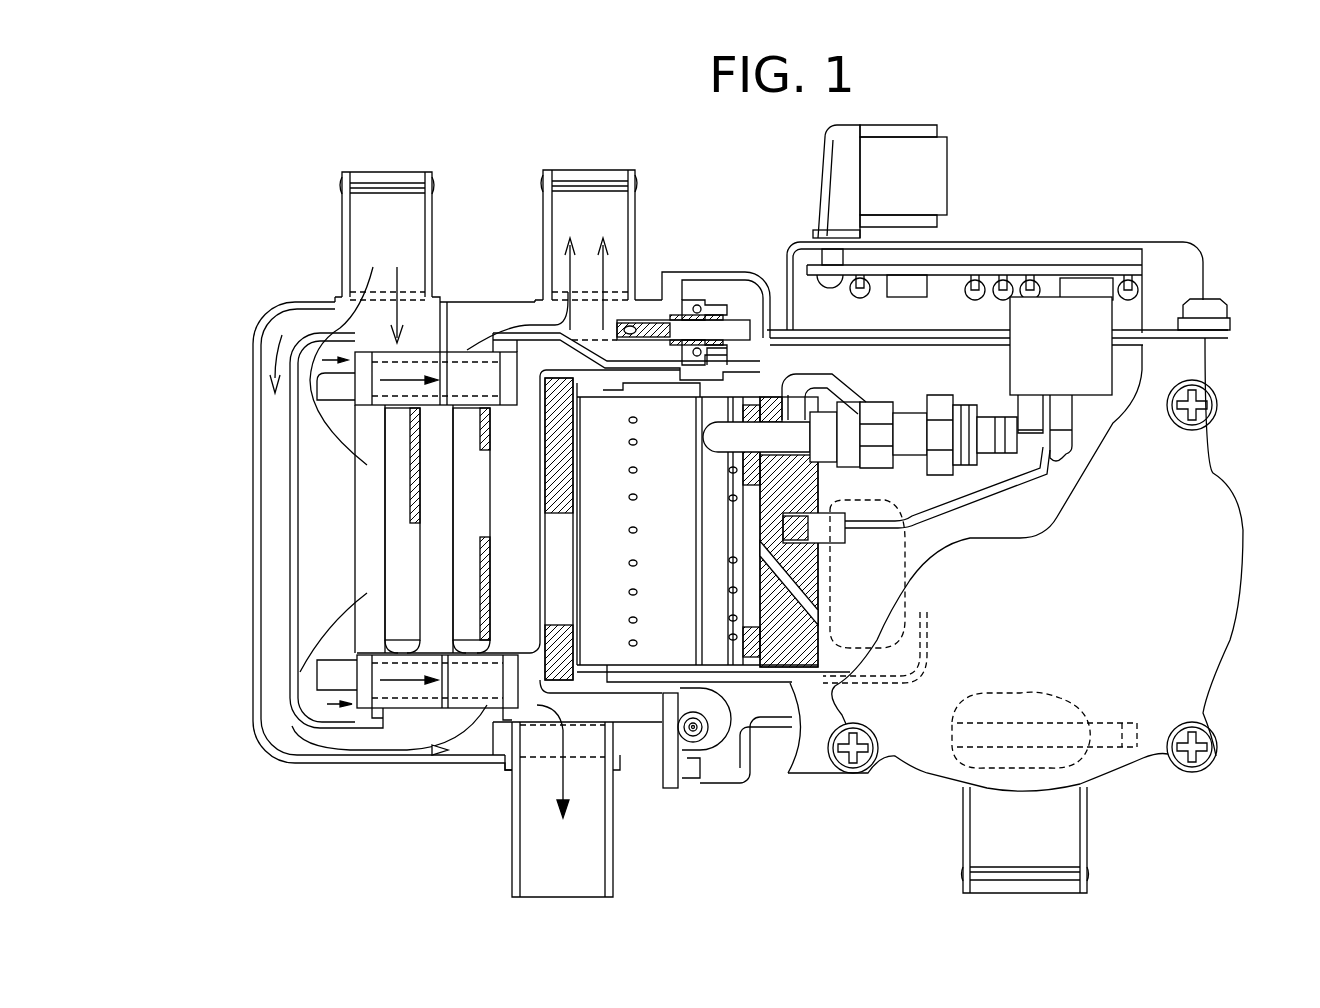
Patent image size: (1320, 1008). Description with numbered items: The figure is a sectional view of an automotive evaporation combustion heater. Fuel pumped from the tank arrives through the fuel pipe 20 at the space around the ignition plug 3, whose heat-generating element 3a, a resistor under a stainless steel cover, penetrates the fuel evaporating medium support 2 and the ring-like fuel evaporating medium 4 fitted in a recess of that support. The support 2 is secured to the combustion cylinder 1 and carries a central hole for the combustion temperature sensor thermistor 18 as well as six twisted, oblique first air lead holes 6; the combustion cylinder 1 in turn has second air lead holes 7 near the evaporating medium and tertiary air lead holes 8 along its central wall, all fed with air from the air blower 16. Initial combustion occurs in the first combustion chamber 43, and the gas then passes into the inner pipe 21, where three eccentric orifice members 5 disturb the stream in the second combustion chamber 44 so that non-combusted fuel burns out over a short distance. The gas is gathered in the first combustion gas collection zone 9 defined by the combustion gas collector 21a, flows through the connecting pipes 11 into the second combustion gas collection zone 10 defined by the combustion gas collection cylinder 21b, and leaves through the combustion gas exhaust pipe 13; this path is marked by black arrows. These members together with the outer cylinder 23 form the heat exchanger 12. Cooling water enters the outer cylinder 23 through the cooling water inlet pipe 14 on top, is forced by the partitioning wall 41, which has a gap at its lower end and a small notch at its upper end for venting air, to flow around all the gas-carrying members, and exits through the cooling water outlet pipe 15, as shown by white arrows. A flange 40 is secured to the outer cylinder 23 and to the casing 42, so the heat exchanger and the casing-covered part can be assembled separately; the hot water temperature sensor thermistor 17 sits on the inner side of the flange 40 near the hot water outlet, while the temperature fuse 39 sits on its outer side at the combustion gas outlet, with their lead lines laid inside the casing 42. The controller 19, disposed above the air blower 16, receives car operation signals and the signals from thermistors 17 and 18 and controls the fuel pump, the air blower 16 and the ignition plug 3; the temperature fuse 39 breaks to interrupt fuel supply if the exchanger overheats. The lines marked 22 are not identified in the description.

The combustion cylinder 1 is at (673, 407).
The fuel evaporating medium support 2 is at (830, 656).
The ignition plug 3 is at (938, 408).
The heat-generating element 3a is at (723, 455).
The fuel evaporating medium 4 is at (753, 657).
The eccentric orifice members 5 is at (546, 652).
The first air lead holes 6 is at (808, 612).
The second air lead holes 7 is at (731, 412).
The tertiary air lead holes 8 is at (627, 420).
The first combustion gas collection zone 9 is at (320, 620).
The second combustion gas collection zone 10 is at (633, 713).
The connecting pipes 11 is at (422, 362).
The heat exchanger 12 is at (283, 752).
The combustion gas exhaust pipe 13 is at (588, 868).
The cooling water inlet pipe 14 is at (345, 240).
The cooling water outlet pipe 15 is at (592, 205).
The air blower 16 is at (1222, 545).
The hot water temperature sensor thermistor 17 is at (633, 326).
The combustion temperature sensor thermistor 18 is at (835, 518).
The controller 19 is at (1114, 248).
The fuel pipe 20 is at (838, 373).
The inner pipe 21 is at (380, 655).
The combustion gas collector 21a is at (295, 470).
The combustion gas collection cylinder 21b is at (512, 330).
The outer housing 22 is at (267, 352).
The outer cylinder 23 is at (257, 668).
The temperature fuse 39 is at (708, 730).
The flange 40 is at (672, 790).
The partitioning wall 41 is at (452, 335).
The casing 42 is at (750, 790).
The first combustion chamber 43 is at (546, 537).
The second combustion chamber 44 is at (395, 568).